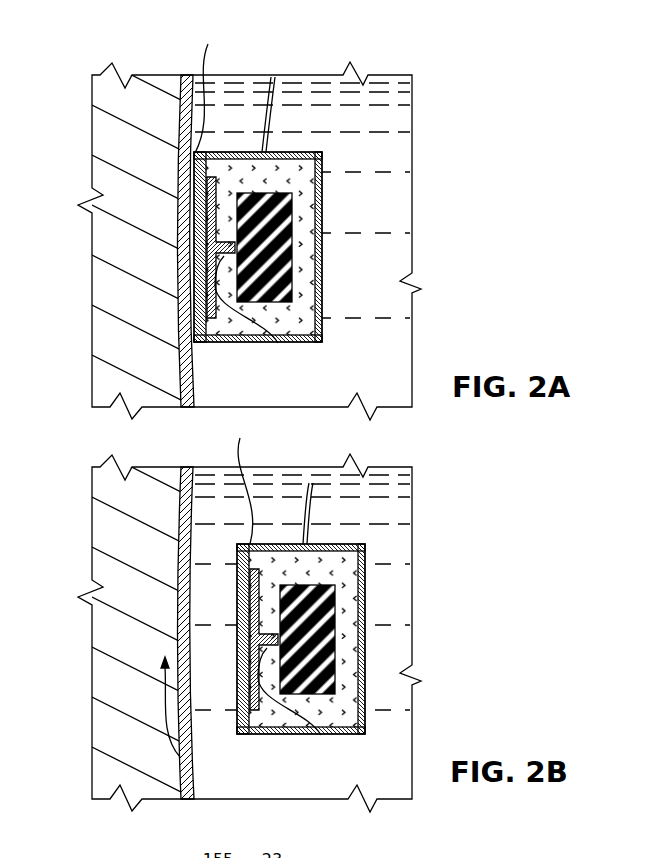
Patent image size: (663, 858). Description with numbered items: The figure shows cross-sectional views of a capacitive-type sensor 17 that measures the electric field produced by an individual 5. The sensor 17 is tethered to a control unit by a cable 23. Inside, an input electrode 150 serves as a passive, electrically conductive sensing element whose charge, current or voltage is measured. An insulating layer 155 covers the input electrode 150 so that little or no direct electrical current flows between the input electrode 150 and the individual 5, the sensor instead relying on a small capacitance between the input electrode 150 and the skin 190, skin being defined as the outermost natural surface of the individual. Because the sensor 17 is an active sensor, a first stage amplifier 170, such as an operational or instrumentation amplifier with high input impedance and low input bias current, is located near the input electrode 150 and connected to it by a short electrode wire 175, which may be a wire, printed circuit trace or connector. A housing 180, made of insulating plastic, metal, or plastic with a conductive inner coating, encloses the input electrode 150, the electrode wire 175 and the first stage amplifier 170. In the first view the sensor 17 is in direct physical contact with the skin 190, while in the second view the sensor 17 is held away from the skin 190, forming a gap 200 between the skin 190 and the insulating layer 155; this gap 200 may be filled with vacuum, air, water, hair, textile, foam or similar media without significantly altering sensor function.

In FIG. 2A, the individual 5 is at (92, 167).
In FIG. 2B, the individual 5 is at (104, 629).
In FIG. 2A, the capacitive-type sensor 17 is at (340, 239).
In FIG. 2B, the capacitive-type sensor 17 is at (384, 639).
In FIG. 2A, the cable 23 is at (271, 77).
In FIG. 2B, the cable 23 is at (317, 483).
In FIG. 2A, the input electrode 150 is at (211, 320).
In FIG. 2B, the input electrode 150 is at (271, 673).
In FIG. 2A, the insulating layer 155 is at (208, 88).
In FIG. 2B, the insulating layer 155 is at (248, 481).
In FIG. 2A, the first stage amplifier 170 is at (293, 283).
In FIG. 2B, the first stage amplifier 170 is at (393, 658).
In FIG. 2A, the electrode wire 175 is at (278, 343).
In FIG. 2B, the electrode wire 175 is at (300, 715).
In FIG. 2A, the housing 180 is at (322, 268).
In FIG. 2B, the housing 180 is at (374, 639).
In FIG. 2A, the skin 190 is at (188, 408).
In FIG. 2B, the skin 190 is at (172, 658).
In FIG. 2B, the gap 200 is at (182, 718).